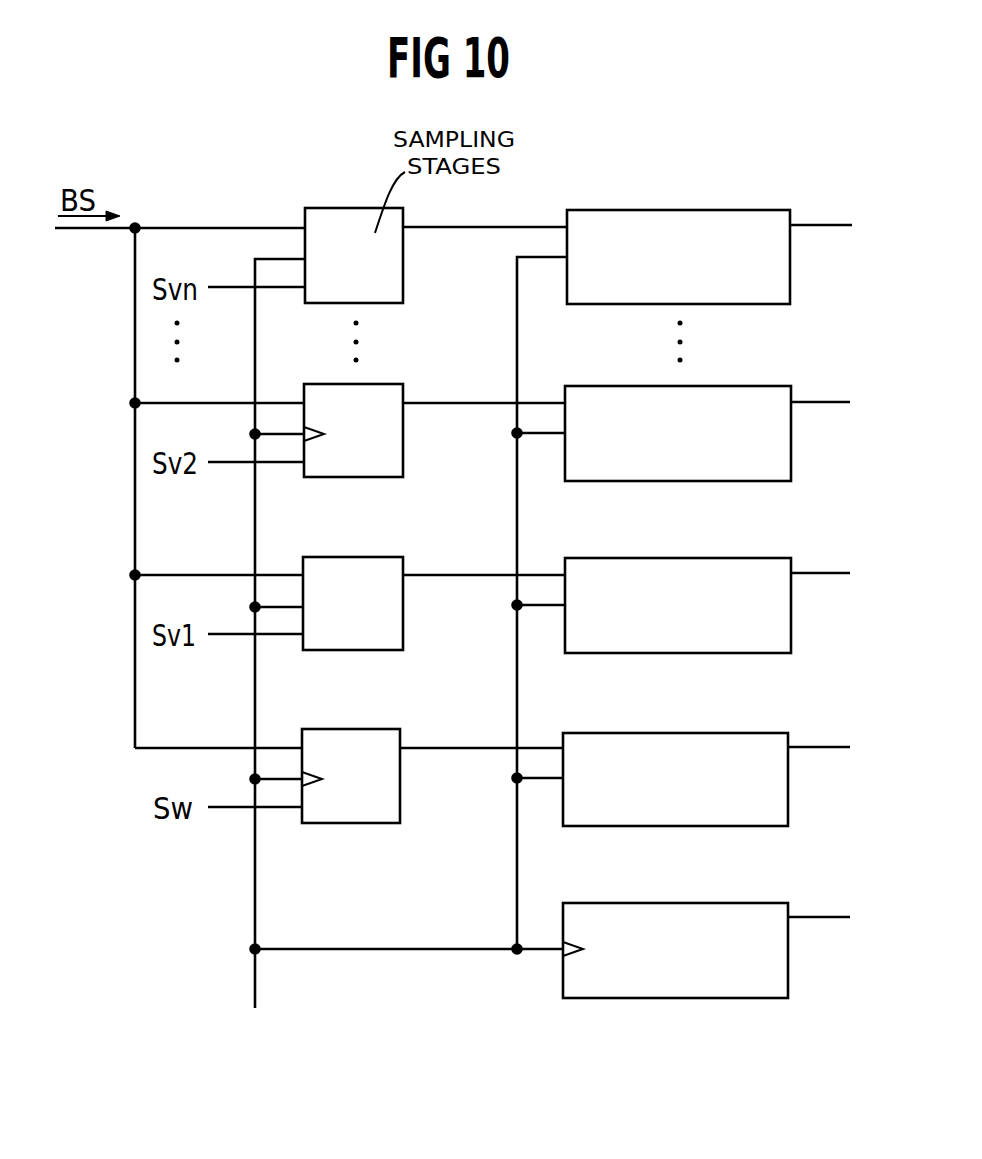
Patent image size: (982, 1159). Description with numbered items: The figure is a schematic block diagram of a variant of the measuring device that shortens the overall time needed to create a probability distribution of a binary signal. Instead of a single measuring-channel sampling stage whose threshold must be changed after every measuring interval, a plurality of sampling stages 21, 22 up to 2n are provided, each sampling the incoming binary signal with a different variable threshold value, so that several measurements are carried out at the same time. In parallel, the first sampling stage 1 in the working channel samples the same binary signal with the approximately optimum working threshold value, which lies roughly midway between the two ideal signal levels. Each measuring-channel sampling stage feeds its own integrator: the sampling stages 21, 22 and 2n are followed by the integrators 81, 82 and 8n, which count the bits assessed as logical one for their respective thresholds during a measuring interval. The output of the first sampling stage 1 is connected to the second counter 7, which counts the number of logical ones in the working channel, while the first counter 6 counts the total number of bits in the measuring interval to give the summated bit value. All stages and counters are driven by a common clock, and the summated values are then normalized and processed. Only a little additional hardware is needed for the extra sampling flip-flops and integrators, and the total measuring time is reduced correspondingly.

The sampling stage 2n is at (365, 207).
The sampling stage 22 is at (395, 384).
The sampling stage 21 is at (350, 557).
The first sampling stage 1 is at (350, 729).
The integrator 8n is at (720, 210).
The integrator 82 is at (738, 386).
The integrator 81 is at (738, 558).
The second counter 7 is at (738, 733).
The first counter 6 is at (736, 903).